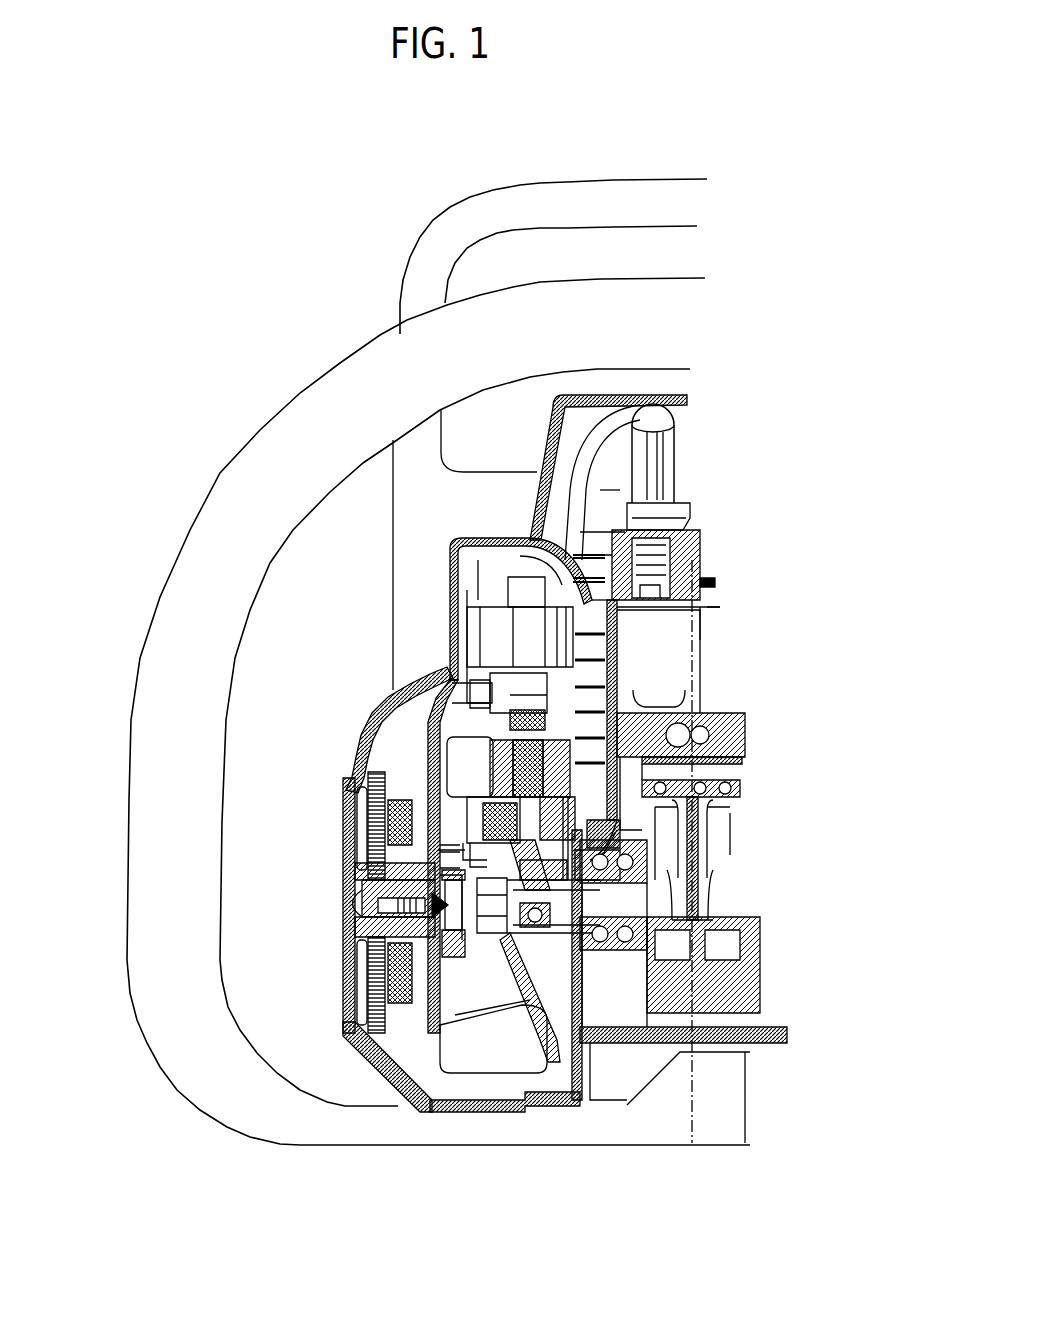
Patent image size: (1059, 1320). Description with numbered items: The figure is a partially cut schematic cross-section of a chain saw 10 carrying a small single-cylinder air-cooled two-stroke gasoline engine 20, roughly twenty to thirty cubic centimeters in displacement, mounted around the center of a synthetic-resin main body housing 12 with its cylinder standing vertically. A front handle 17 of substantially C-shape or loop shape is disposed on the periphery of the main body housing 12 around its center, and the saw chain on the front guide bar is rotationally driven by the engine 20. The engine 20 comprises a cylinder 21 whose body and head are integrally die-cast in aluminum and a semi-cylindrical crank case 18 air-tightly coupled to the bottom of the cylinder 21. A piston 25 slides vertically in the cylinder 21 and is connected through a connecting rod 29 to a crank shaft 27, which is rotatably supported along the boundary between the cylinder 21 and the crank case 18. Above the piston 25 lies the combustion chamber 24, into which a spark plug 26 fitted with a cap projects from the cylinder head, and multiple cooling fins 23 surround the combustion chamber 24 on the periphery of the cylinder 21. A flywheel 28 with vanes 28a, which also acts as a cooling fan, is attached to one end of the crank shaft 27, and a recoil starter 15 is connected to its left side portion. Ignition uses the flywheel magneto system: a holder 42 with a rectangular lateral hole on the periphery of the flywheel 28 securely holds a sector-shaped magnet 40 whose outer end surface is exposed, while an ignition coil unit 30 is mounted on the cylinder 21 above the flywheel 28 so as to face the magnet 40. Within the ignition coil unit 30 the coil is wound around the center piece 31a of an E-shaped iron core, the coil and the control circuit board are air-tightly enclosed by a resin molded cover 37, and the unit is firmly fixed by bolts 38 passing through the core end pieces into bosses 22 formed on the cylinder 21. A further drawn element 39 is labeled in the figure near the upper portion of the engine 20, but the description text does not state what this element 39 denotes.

The chain saw 10 is at (392, 199).
The main body housing 12 is at (438, 667).
The recoil starter 15 is at (410, 1035).
The front handle 17 is at (325, 400).
The crank case 18 is at (650, 1020).
The engine 20 is at (540, 474).
The cylinder 21 is at (556, 612).
The bosses 22 is at (580, 675).
The cooling fins 23 is at (598, 645).
The combustion chamber 24 is at (688, 646).
The piston 25 is at (732, 713).
The spark plug 26 is at (653, 412).
The crank shaft 27 is at (533, 973).
The flywheel 28 is at (537, 1030).
The vanes 28a is at (472, 1060).
The connecting rod 29 is at (692, 876).
The ignition coil unit 30 is at (475, 643).
The center piece 31a is at (560, 708).
The resin molded cover 37 is at (452, 617).
The bolts 38 is at (441, 712).
The bracket channel 39 is at (586, 442).
The magnet 40 is at (492, 757).
The holder 42 is at (443, 783).